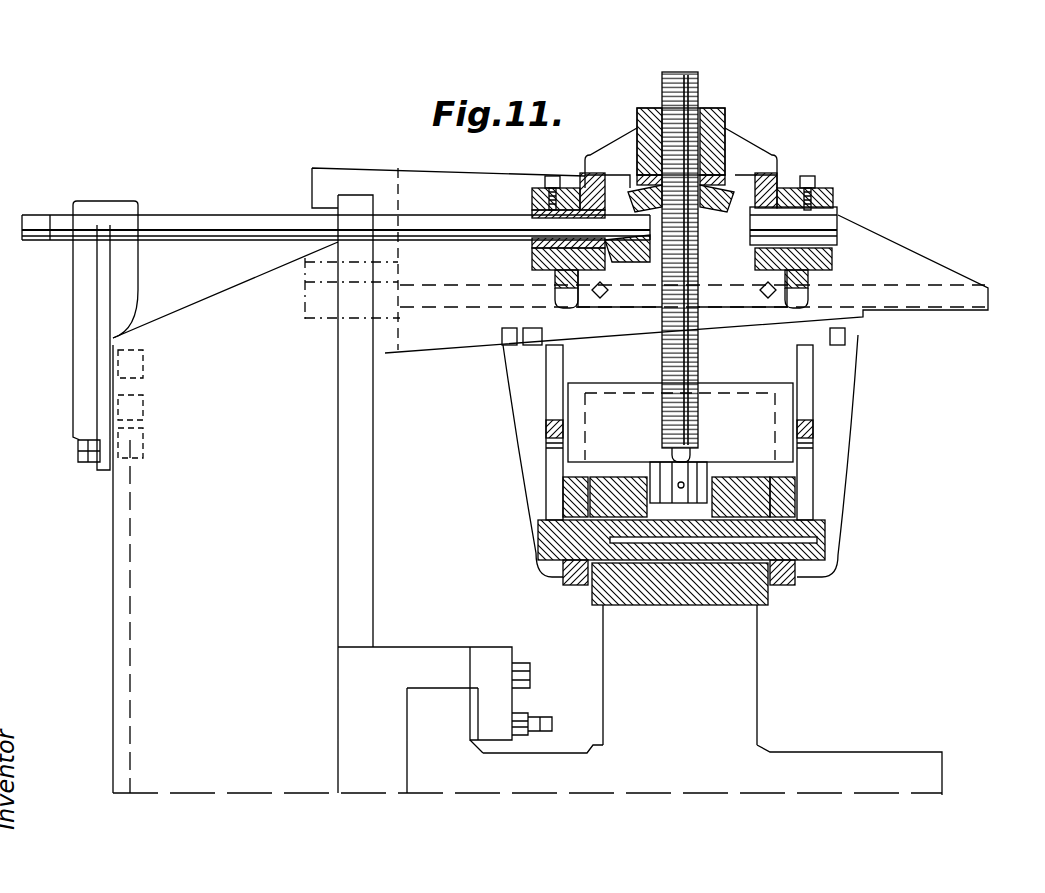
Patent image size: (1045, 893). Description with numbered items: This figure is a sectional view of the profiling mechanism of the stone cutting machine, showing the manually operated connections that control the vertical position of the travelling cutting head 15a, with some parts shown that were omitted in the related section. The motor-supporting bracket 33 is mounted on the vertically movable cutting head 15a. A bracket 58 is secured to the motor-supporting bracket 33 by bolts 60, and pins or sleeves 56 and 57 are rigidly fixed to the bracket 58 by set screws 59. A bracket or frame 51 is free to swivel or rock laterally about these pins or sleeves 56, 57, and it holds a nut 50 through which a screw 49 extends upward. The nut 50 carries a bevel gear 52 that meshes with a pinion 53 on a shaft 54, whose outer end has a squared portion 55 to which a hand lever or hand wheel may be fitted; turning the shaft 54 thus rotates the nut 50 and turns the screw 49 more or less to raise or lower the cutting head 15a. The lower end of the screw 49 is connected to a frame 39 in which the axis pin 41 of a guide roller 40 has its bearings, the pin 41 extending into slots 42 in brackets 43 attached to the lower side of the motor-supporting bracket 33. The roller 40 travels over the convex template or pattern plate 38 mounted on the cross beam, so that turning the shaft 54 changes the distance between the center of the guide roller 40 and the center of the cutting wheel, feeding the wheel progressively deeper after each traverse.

The cutting head 15a is at (527, 480).
The motor-supporting bracket 33 is at (962, 290).
The template or pattern plate 38 is at (742, 652).
The frame 39 is at (743, 390).
The roller 40 is at (755, 592).
The axis pin 41 is at (826, 522).
The slots 42 is at (548, 464).
The brackets 43 is at (520, 378).
The screw 49 is at (695, 95).
The nut 50 is at (657, 108).
The bracket or frame 51 is at (752, 165).
The bevel gear 52 is at (718, 215).
The pinion 53 is at (628, 250).
The shaft 54 is at (425, 218).
The squared portion 55 is at (45, 242).
The pin or sleeve 56 is at (832, 216).
The pin or sleeve 57 is at (532, 205).
The bracket 58 is at (556, 262).
The set screws 59 is at (553, 176).
The bolts 60 is at (608, 290).